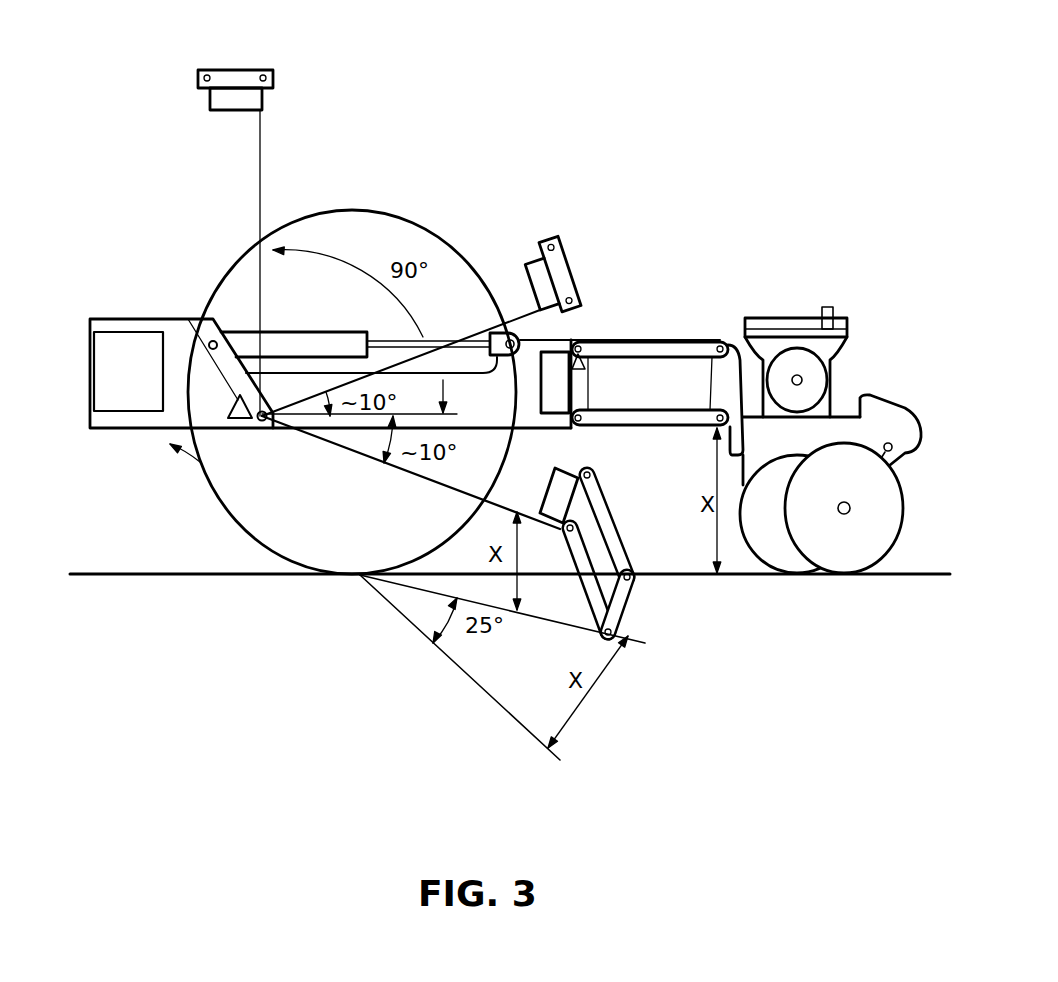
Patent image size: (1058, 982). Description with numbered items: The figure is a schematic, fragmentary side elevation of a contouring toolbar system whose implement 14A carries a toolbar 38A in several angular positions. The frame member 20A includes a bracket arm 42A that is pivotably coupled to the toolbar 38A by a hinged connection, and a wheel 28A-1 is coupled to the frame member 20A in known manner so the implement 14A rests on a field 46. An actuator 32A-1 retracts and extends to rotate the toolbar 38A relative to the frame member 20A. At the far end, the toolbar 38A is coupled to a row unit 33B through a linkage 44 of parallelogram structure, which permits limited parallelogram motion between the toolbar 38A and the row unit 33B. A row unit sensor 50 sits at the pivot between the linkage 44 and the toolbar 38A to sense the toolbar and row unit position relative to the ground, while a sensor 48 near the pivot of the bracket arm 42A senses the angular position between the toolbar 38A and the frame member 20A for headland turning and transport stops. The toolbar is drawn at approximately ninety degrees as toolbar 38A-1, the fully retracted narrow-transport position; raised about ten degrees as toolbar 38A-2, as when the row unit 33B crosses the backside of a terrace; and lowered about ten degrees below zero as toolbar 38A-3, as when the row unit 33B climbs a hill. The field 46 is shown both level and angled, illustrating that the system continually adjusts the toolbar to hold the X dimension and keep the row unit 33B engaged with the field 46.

The implement 14A is at (773, 118).
The frame member 20A is at (122, 367).
The bracket arm 42A is at (182, 410).
The sensor 48 is at (232, 398).
The actuator 32A-1 is at (297, 340).
The wheel 28A-1 is at (393, 532).
The toolbar (raised approximately 90 degree position) 38A-1 is at (232, 85).
The toolbar (raised approximately 10 degree position) 38A-2 is at (549, 263).
The toolbar 38A is at (562, 342).
The row unit sensor 50 is at (588, 364).
The linkage 44 is at (685, 427).
The row unit 33B is at (887, 335).
The toolbar (lowered approximately 10 degree position) 38A-3 is at (547, 490).
The field 46 is at (258, 642).